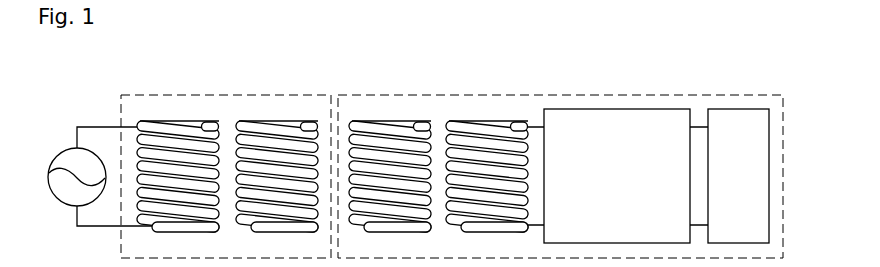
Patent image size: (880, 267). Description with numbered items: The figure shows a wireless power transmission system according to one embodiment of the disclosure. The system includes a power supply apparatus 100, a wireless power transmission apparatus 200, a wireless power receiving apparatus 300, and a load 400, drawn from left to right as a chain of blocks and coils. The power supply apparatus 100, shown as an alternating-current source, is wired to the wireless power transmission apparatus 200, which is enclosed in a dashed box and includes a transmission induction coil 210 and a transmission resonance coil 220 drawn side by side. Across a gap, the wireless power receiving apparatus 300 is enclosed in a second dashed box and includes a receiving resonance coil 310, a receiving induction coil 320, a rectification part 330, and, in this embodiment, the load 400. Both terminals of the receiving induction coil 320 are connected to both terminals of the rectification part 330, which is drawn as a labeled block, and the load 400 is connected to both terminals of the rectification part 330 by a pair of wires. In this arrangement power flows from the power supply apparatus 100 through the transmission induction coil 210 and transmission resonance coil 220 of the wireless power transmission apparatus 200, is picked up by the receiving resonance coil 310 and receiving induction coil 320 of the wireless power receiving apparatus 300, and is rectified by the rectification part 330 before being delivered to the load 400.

The power supply apparatus 100 is at (55, 152).
The wireless power transmission apparatus 200 is at (132, 93).
The transmission induction coil 210 is at (191, 136).
The transmission resonance coil 220 is at (273, 136).
The wireless power receiving apparatus 300 is at (436, 93).
The receiving resonance coil 310 is at (385, 130).
The receiving induction coil 320 is at (496, 133).
The rectification part 330 is at (624, 108).
The load 400 is at (738, 108).